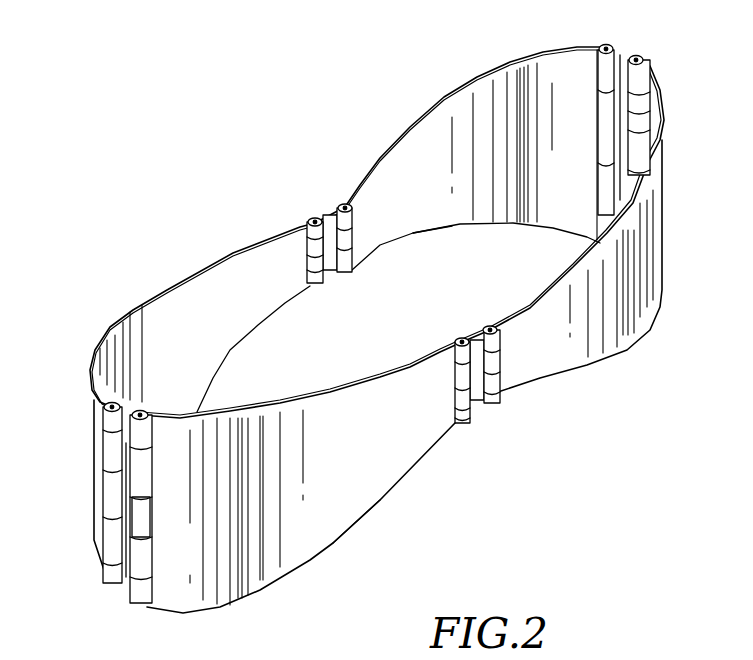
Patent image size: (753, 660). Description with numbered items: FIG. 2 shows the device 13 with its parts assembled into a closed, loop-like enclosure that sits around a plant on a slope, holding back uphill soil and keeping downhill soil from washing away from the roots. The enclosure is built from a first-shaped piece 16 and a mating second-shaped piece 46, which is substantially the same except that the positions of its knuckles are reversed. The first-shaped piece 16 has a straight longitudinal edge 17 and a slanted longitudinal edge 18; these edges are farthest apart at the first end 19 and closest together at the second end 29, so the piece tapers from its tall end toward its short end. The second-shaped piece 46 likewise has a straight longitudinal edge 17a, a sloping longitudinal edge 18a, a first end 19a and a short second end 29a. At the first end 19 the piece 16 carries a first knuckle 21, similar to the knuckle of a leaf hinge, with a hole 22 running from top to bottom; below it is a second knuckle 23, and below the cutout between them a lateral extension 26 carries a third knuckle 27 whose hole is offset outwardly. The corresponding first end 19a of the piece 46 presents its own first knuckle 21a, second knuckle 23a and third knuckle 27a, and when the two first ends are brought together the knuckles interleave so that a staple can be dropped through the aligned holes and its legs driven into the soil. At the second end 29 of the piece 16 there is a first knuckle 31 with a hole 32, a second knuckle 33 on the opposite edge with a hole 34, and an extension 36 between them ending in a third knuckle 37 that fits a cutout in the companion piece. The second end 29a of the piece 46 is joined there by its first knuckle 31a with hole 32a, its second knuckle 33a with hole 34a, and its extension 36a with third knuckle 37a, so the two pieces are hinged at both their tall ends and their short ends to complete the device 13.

The device 13 is at (482, 70).
The first-shaped piece 16 is at (524, 73).
The straight longitudinal edge 17 is at (452, 228).
The slanted longitudinal edge 18 is at (420, 117).
The first end 19 is at (564, 62).
The first knuckle 21 is at (612, 46).
The hole 22 is at (604, 46).
The second knuckle 23 is at (113, 437).
The second knuckle 23a is at (640, 80).
The lateral extension 26 is at (618, 108).
The third knuckle 27 is at (640, 117).
The third knuckle 27a is at (143, 513).
The second end 29 is at (258, 311).
The second end 29a is at (367, 463).
The first knuckle 31 is at (348, 213).
The first knuckle 31a is at (513, 337).
The hole 32 is at (340, 205).
The hole 32a is at (467, 340).
The second knuckle 33 is at (307, 227).
The second knuckle 33a is at (472, 368).
The hole 34 is at (313, 220).
The hole 34a is at (457, 342).
The extension 36 is at (310, 250).
The extension 36a is at (470, 404).
The third knuckle 37 is at (352, 250).
The third knuckle 37a is at (503, 392).
The straight longitudinal edge 17a is at (587, 367).
The slanted longitudinal edge 18a is at (577, 267).
The first end 19a is at (192, 590).
The first knuckle 21a is at (110, 410).
The second-shaped piece 46 is at (313, 540).